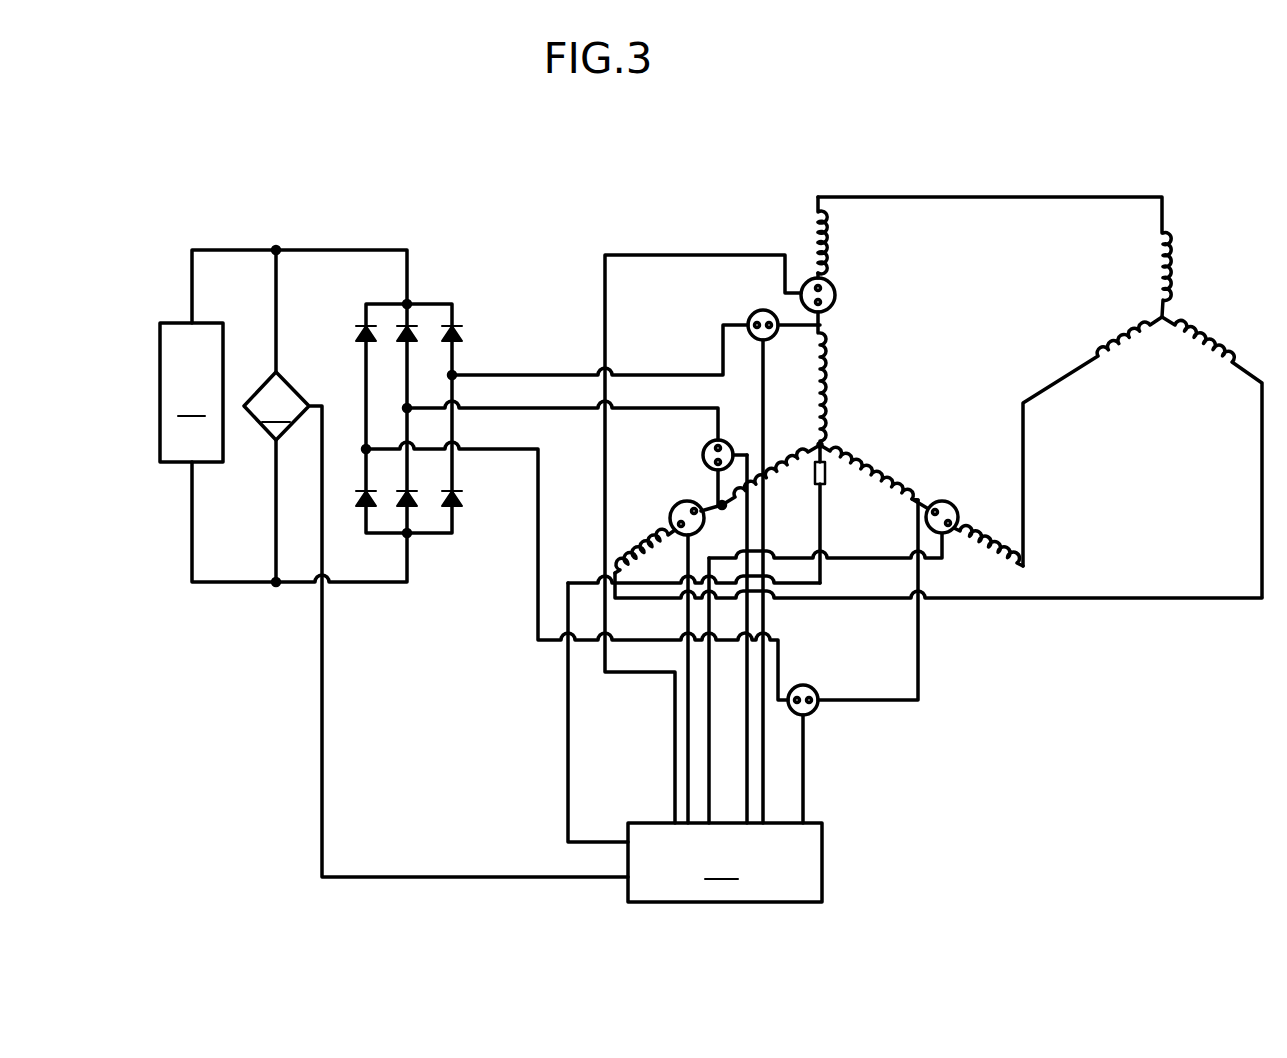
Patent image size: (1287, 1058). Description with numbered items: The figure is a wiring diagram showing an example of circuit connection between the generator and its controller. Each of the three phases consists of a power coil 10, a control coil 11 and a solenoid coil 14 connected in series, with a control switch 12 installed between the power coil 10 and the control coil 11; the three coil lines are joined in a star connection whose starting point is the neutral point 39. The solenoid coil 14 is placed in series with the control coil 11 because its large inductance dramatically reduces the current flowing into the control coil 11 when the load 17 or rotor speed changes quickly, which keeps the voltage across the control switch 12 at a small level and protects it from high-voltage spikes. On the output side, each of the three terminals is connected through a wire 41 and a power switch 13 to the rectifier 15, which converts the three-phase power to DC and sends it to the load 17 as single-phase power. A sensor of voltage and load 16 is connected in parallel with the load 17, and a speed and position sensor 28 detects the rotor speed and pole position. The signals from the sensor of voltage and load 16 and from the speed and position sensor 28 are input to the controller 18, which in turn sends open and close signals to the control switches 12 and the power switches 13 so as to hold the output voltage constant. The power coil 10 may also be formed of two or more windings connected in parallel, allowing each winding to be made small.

The power coil 10 is at (831, 376).
The control coil 11 is at (812, 228).
The control switch 12 is at (838, 287).
The power switch 13 is at (751, 314).
The solenoid coil 14 is at (1182, 306).
The rectifier 15 is at (447, 300).
The sensor of voltage and load 16 is at (436, 624).
The load 17 is at (191, 392).
The controller 18 is at (725, 862).
The speed and position sensor 28 is at (829, 482).
The neutral point 39 is at (824, 443).
The wire 41 is at (552, 375).